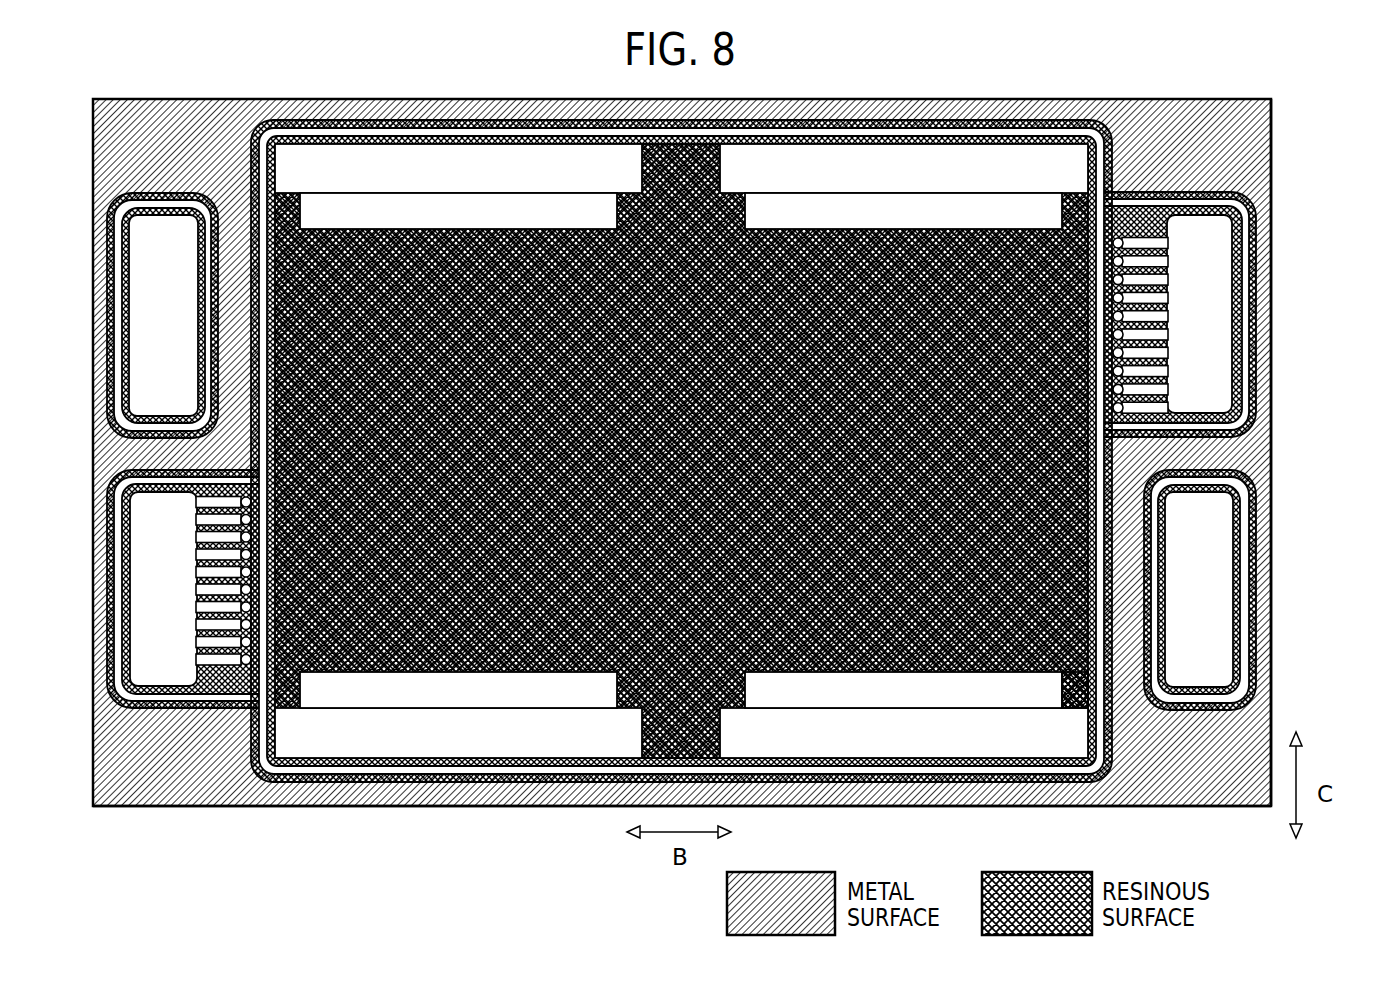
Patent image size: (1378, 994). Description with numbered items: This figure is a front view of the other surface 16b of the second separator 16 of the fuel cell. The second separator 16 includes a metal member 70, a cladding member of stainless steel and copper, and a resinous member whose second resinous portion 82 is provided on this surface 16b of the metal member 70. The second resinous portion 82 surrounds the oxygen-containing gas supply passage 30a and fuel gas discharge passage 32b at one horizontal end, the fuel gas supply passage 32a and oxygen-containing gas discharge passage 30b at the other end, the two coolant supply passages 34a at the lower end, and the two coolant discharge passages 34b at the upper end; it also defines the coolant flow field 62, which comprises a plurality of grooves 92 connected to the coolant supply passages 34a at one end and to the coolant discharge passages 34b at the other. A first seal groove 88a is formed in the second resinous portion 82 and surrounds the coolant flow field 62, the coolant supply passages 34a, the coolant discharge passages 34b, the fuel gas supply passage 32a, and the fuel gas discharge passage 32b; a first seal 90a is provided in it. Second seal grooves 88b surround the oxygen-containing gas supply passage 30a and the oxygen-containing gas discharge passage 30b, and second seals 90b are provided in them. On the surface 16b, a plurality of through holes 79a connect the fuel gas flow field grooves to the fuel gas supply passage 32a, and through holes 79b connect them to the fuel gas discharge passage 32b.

The second separator 16 is at (1014, 80).
The surface of the second separator 16b is at (1118, 792).
The oxygen-containing gas supply passage 30a is at (163, 315).
The oxygen-containing gas discharge passage 30b is at (1199, 589).
The fuel gas supply passage 32a is at (1171, 314).
The fuel gas discharge passage 32b is at (192, 589).
The coolant supply passages 34a is at (681, 733).
The coolant discharge passages 34b is at (681, 168).
The coolant flow field 62 is at (406, 662).
The metal member 70 is at (1272, 519).
The through holes 79a is at (1124, 406).
The through holes 79b is at (237, 552).
The second resinous portion 82 is at (1070, 707).
The first seal groove 88a is at (497, 780).
The second seal grooves 88b is at (118, 352).
The first seal 90a is at (570, 783).
The second seals 90b is at (110, 323).
The grooves 92 is at (326, 672).